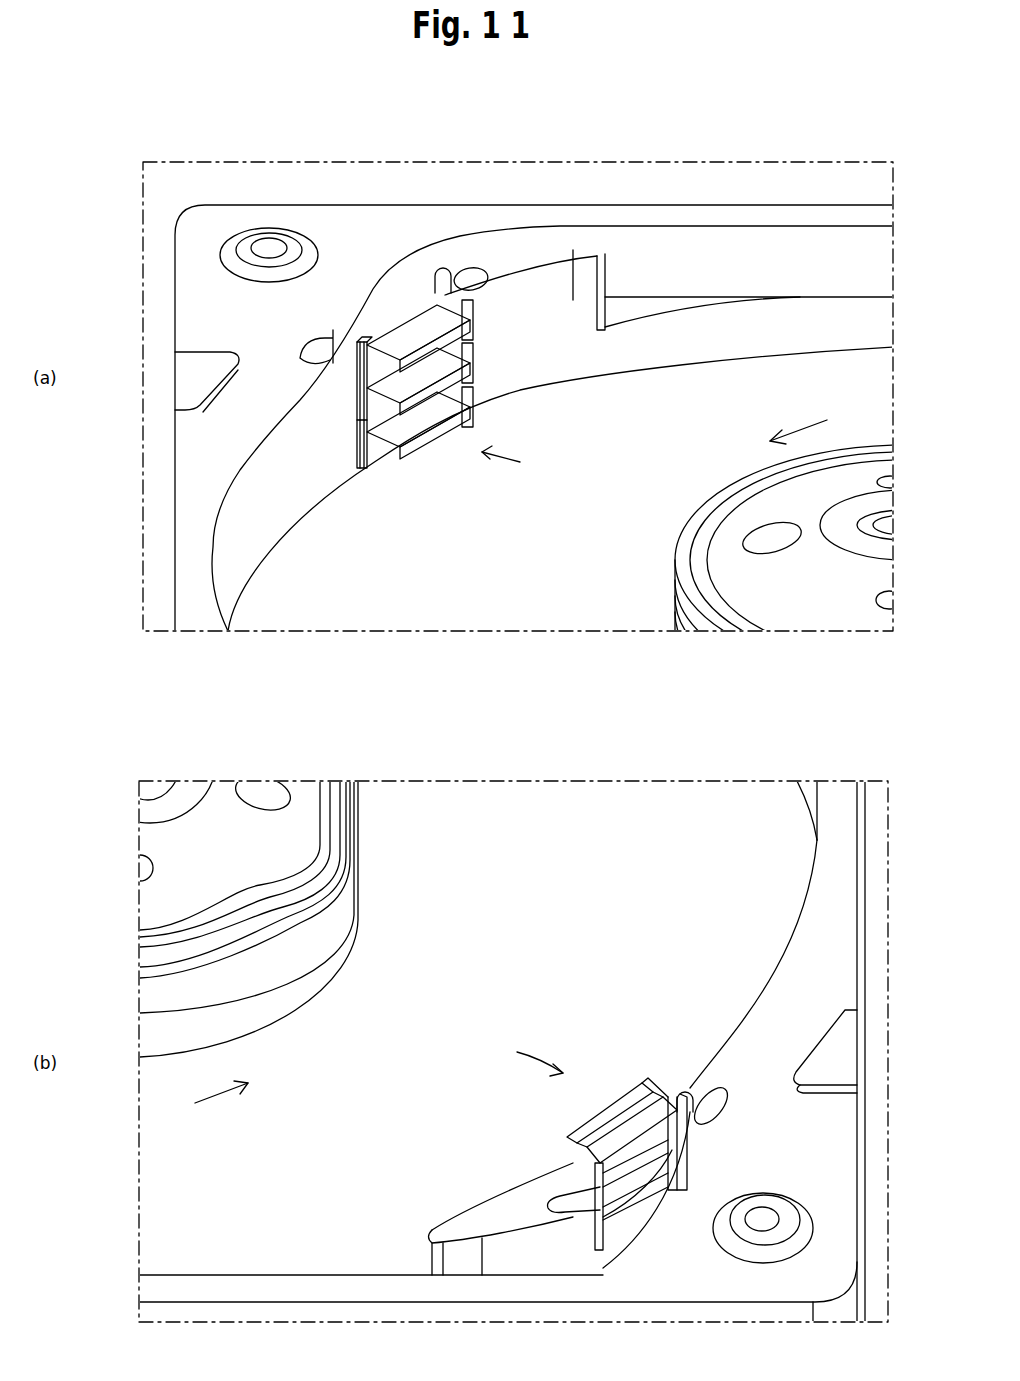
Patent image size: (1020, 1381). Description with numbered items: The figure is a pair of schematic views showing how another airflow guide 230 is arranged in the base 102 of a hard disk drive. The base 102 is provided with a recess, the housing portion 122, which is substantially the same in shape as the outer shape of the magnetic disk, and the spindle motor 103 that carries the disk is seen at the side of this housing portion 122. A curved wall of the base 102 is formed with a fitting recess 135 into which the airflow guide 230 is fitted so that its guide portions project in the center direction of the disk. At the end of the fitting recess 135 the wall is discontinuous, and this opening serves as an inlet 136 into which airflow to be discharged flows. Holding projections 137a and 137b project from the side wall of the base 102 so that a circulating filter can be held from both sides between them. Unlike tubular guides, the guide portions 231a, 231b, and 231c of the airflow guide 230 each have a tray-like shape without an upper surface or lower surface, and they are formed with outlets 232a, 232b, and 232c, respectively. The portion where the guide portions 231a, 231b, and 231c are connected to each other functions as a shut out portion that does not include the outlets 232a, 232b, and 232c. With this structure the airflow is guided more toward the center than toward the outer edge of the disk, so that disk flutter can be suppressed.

The base 102 is at (187, 626).
The spindle motor 103 is at (738, 482).
The housing portion 122 is at (412, 626).
The fitting recess 135 is at (372, 288).
The inlet 136 is at (605, 288).
The holding projection 137a is at (315, 345).
The holding projection 137b is at (440, 268).
The airflow guide 230 is at (487, 775).
The guide portion 231a is at (483, 328).
The guide portion 231b is at (370, 413).
The guide portion 231c is at (379, 480).
The outlet 232a is at (437, 317).
The outlet 232b is at (487, 372).
The outlet 232c is at (458, 440).